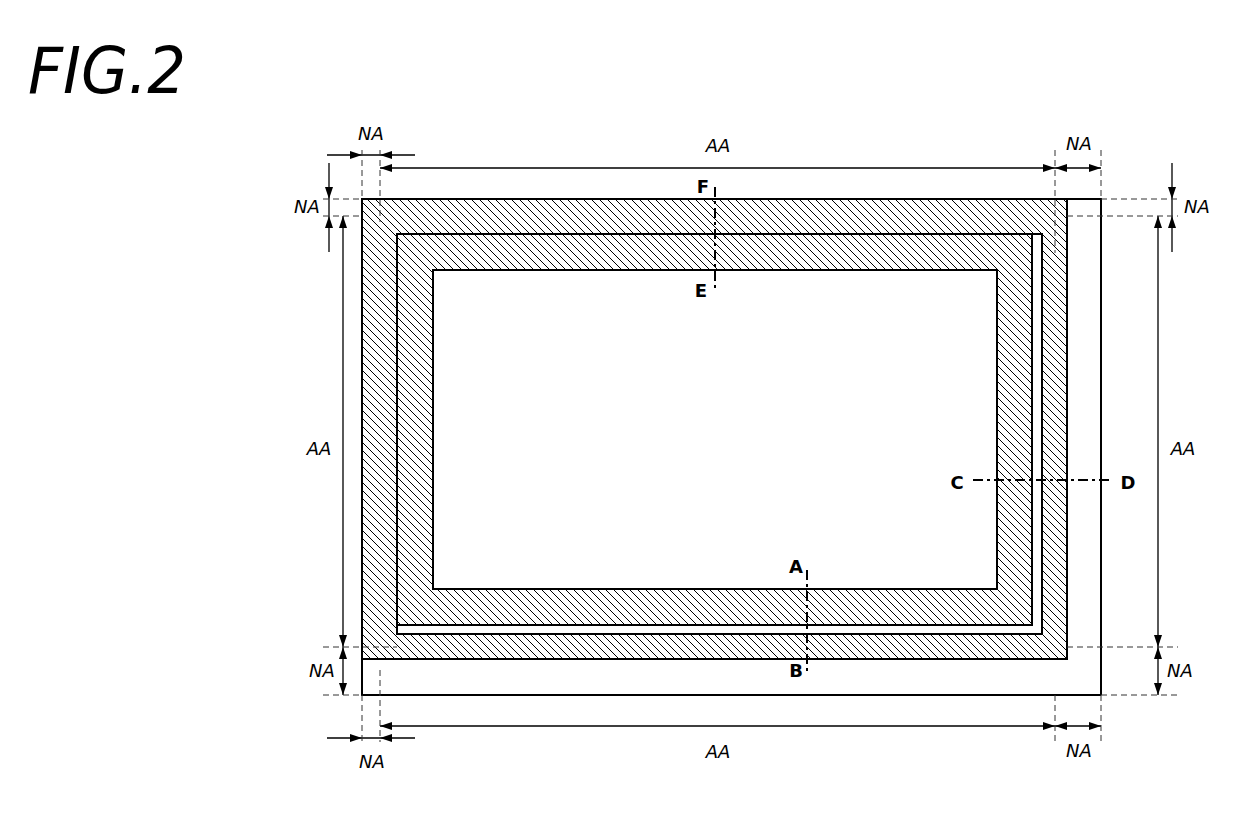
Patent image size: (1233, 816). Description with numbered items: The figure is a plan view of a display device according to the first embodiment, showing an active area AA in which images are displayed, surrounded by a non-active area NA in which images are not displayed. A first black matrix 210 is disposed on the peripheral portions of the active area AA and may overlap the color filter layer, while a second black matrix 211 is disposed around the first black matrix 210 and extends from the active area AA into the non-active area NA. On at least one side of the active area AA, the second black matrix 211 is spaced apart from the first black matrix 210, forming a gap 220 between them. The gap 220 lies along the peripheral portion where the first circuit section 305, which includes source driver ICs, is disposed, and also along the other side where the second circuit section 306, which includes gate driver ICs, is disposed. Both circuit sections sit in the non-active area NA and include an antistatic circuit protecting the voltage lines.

The first black matrix 210 is at (897, 247).
The second black matrix 211 is at (940, 210).
The gap 220 is at (1037, 361).
The first circuit section 305 is at (931, 685).
The second circuit section 306 is at (1092, 530).